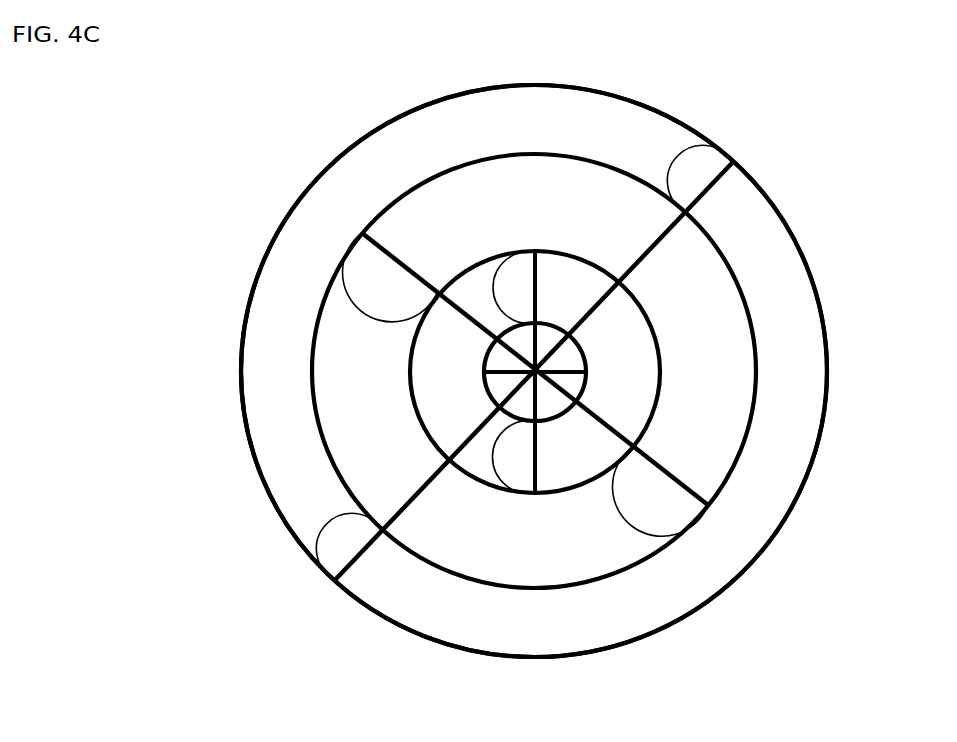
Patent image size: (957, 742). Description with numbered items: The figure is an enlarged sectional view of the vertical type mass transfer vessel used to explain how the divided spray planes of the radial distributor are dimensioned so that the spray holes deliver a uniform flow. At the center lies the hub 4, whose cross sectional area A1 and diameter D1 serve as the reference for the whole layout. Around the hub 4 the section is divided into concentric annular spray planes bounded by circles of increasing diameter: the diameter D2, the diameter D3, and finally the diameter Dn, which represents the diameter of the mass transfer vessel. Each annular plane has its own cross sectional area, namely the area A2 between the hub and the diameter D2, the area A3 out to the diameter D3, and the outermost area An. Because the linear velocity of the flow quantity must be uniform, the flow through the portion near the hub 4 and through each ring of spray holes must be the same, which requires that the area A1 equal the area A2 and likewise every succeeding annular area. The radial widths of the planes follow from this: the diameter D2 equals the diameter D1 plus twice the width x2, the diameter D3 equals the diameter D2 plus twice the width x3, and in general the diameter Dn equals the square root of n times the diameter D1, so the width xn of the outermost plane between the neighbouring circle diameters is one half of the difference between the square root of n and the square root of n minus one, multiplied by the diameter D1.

The hub 4 is at (573, 302).
The cross sectional area of the n-th divided spray plane An is at (534, 371).
The cross sectional area of the third divided spray plane A3 is at (534, 371).
The cross sectional area of the diameter D2 A2 is at (535, 372).
The cross sectional area of the hub A1 is at (547, 372).
The diameter of the hub D1 is at (516, 380).
The diameter D2 is at (518, 355).
The diameter D3 is at (514, 358).
The diameter of the mass transfer vessel Dn is at (551, 354).
The width of the second divided spray plane x2 is at (505, 372).
The width of the third divided spray plane x3 is at (525, 384).
The width of the n-th divided spray plane xn is at (521, 362).